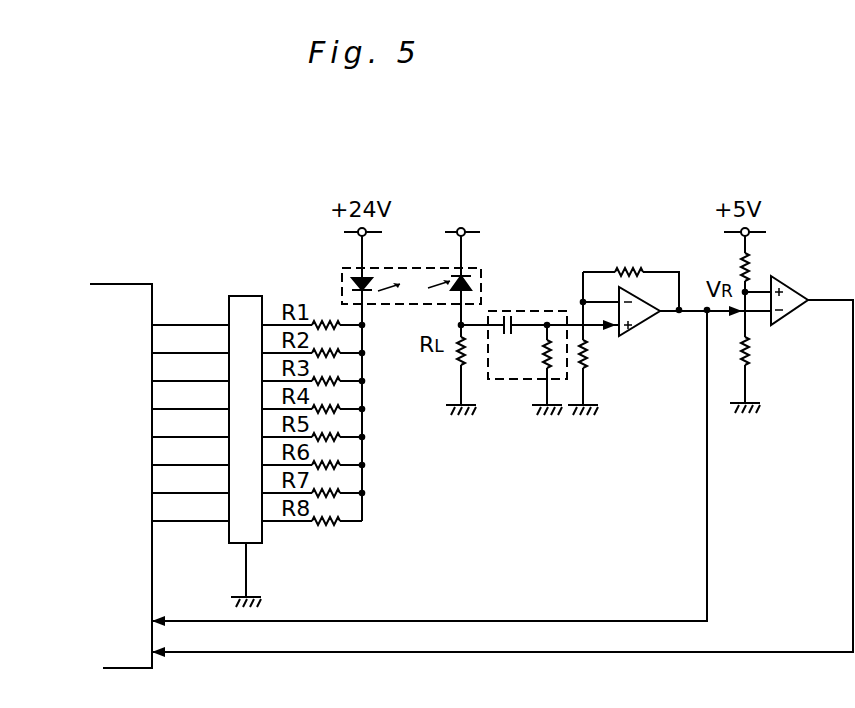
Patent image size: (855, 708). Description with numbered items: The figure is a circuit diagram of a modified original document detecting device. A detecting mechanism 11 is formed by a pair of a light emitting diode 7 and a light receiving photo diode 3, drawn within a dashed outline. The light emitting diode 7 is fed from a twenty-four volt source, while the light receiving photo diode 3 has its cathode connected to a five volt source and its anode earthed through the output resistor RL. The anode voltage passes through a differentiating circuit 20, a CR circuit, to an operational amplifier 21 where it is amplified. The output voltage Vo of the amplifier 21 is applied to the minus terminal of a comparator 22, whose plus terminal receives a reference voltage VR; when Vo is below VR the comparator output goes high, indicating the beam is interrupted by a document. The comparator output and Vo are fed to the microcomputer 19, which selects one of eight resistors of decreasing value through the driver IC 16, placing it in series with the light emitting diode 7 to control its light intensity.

The microcomputer 19 is at (111, 292).
The driver IC 16 is at (245, 302).
The light emitting diode 7 is at (352, 284).
The detecting mechanism 11 is at (408, 268).
The light receiving photo diode 3 is at (475, 283).
The differentiating circuit 20 is at (548, 311).
The operational amplifier 21 is at (642, 340).
The comparator 22 is at (797, 292).